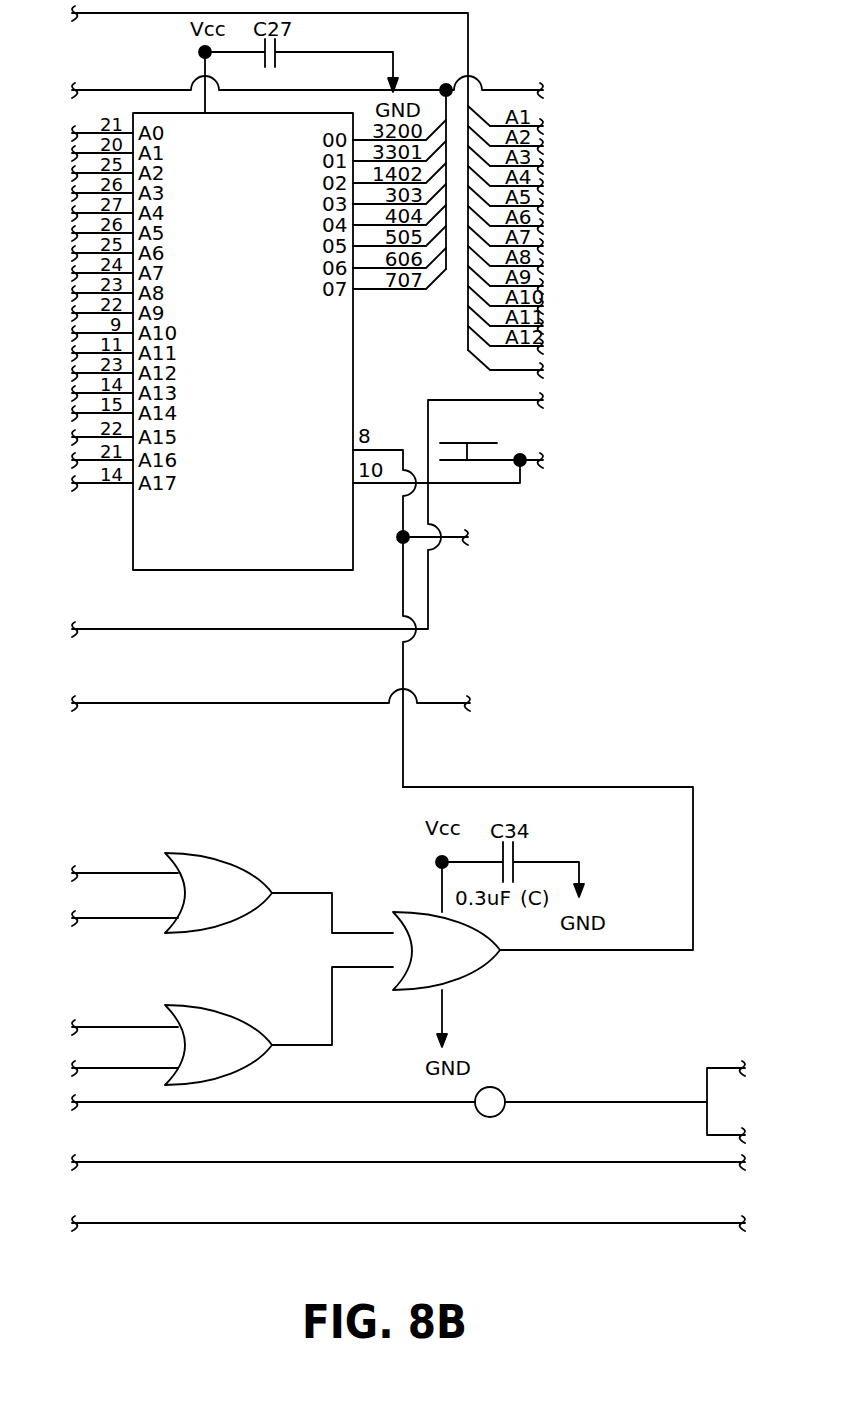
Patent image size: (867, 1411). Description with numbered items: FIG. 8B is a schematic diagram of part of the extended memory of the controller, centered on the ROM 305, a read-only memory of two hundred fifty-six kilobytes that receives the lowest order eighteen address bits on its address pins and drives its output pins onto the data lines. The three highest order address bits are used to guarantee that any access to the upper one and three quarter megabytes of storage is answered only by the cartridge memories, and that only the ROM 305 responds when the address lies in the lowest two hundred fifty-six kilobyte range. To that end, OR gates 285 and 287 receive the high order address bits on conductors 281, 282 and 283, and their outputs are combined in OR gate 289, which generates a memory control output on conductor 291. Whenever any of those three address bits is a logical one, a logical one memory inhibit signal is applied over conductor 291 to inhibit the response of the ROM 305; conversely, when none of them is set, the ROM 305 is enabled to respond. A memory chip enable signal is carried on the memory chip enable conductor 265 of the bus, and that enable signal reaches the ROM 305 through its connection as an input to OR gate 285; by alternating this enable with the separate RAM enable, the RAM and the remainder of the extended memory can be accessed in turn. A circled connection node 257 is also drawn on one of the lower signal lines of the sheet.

The ROM 305 is at (133, 530).
The memory chip enable conductor 265 is at (205, 703).
The conductor 281 is at (117, 873).
The conductor 282 is at (113, 1027).
The conductor 283 is at (95, 1068).
The OR gate 285 is at (260, 866).
The OR gate 287 is at (270, 1058).
The OR gate 289 is at (495, 968).
The conductor 291 is at (547, 787).
The connection node 257 is at (500, 1091).